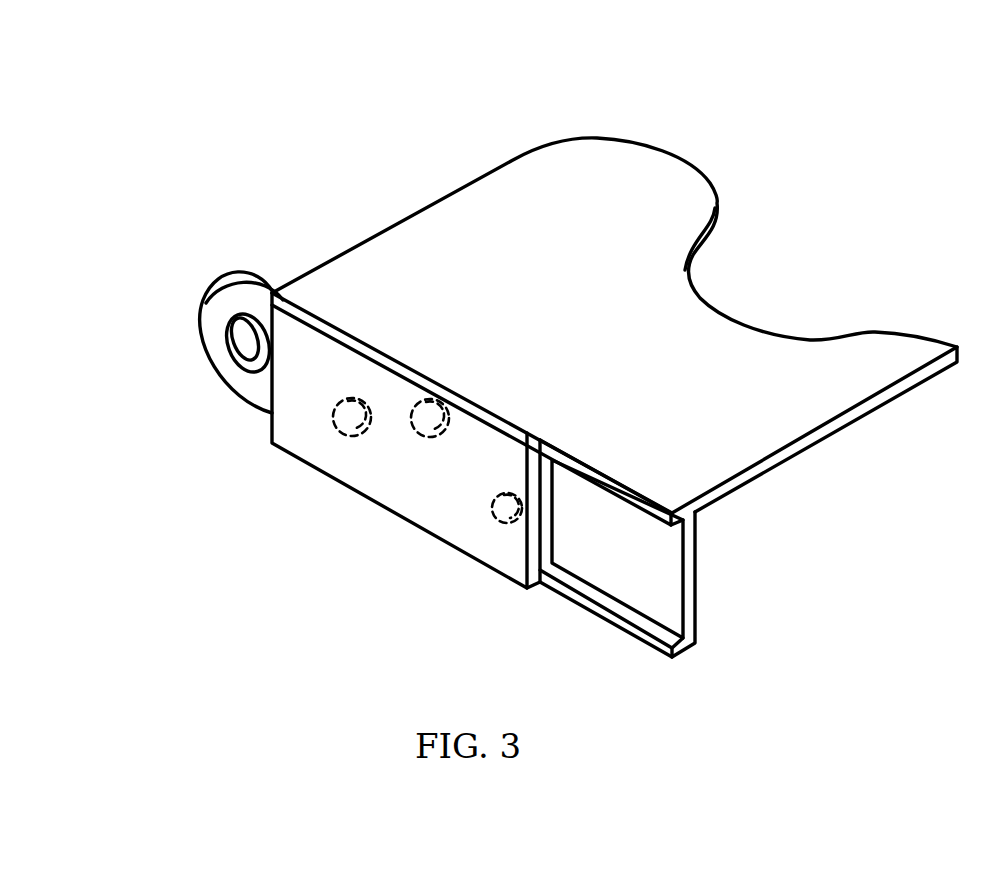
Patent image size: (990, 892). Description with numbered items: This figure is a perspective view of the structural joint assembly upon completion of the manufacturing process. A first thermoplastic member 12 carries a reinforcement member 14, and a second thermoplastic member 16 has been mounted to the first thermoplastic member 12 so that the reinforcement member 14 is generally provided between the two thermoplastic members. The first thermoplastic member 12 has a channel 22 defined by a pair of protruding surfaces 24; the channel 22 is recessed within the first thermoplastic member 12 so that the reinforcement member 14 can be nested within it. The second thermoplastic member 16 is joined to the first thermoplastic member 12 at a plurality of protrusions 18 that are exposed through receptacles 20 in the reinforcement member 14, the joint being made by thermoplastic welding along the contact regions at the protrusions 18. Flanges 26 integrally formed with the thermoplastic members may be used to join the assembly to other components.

The first thermoplastic member 12 is at (780, 421).
The reinforcement member 14 is at (227, 296).
The second thermoplastic member 16 is at (430, 505).
The protrusions 18 is at (507, 527).
The receptacles 20 is at (492, 513).
The channel 22 is at (660, 570).
The protruding surfaces 24 is at (657, 513).
The flanges 26 is at (518, 172).